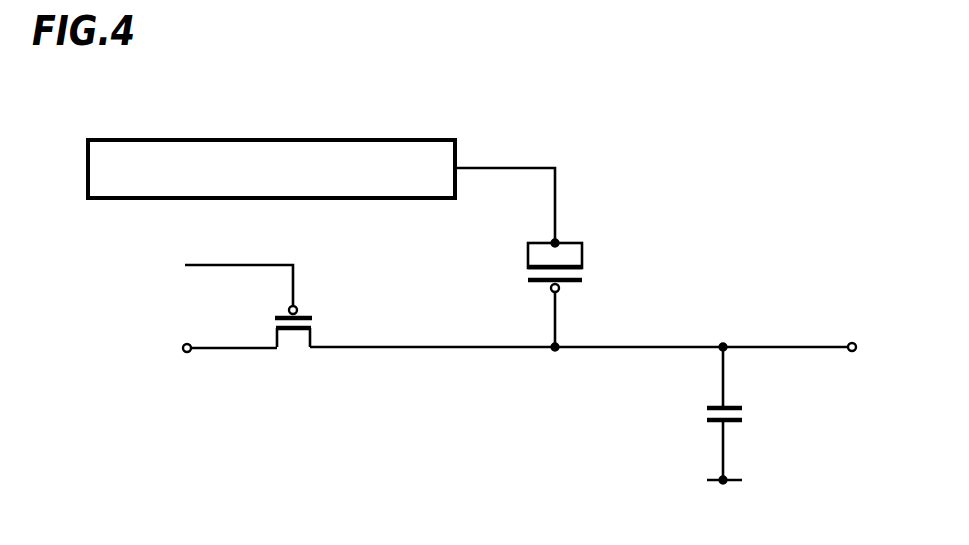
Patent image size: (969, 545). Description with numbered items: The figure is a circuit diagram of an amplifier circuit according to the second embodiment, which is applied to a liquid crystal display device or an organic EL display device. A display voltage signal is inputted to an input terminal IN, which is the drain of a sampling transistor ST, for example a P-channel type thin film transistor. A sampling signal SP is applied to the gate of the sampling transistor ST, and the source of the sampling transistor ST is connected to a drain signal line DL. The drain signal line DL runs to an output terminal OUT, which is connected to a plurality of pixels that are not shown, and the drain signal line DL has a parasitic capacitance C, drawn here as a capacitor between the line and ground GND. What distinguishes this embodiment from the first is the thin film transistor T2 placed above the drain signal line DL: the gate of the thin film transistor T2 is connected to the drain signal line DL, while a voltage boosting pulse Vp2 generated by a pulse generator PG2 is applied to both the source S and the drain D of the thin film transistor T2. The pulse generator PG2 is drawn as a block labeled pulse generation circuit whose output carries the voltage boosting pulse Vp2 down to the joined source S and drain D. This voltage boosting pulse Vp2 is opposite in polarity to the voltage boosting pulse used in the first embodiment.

The pulse generator PG2 is at (290, 140).
The voltage boosting pulse Vp2 is at (507, 193).
The thin film transistor T2 is at (587, 284).
The source S is at (521, 244).
The drain D is at (590, 246).
The sampling signal SP is at (218, 282).
The sampling transistor ST is at (307, 312).
The input terminal IN is at (212, 351).
The output terminal OUT is at (885, 350).
The drain signal line DL is at (503, 350).
The parasitic capacitance C is at (739, 413).
The ground GND is at (735, 497).